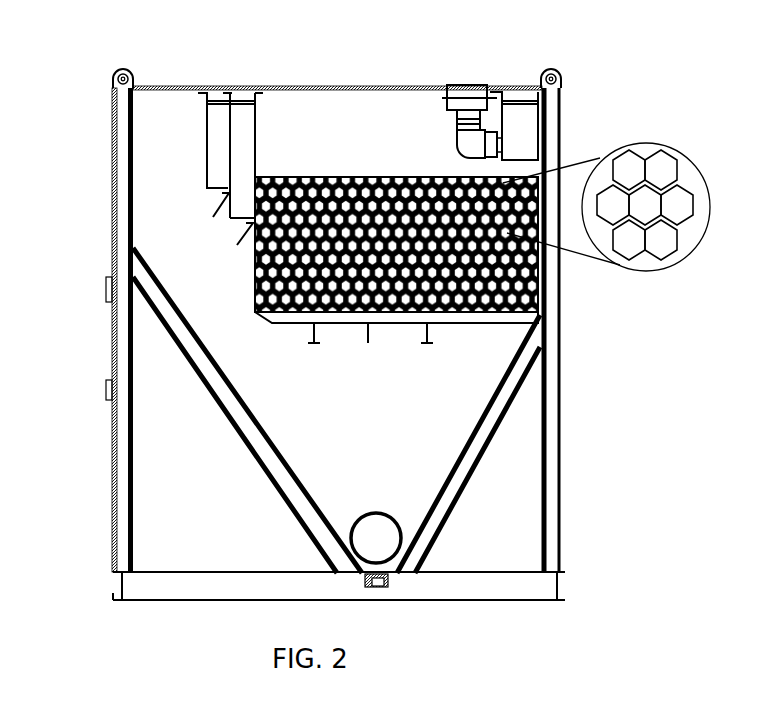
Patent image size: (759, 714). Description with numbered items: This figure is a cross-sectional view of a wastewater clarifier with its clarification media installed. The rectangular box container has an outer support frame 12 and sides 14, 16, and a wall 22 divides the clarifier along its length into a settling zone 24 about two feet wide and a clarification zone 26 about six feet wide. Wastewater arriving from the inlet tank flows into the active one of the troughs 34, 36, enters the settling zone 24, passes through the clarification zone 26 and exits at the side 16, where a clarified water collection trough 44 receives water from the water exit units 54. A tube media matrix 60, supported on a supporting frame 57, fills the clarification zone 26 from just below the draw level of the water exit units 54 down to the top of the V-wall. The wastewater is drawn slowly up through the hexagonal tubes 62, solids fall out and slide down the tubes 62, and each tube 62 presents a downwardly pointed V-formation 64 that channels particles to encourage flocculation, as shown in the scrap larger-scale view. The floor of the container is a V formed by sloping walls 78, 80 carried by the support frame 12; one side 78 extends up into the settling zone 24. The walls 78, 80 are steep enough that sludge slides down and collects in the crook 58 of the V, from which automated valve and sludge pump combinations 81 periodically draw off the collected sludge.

The outer support frame 12 is at (125, 472).
The side 14 is at (124, 220).
The side 16 is at (553, 400).
The wall 22 is at (250, 262).
The settling zone 24 is at (188, 224).
The clarification zone 26 is at (367, 382).
The trough 34 is at (218, 141).
The trough 36 is at (240, 172).
The clarified water collection trough 44 is at (515, 130).
The water exit unit 54 is at (466, 68).
The supporting frame 57 is at (388, 322).
The crook of the V-form floor 58 is at (345, 528).
The tube media matrix 60 is at (477, 247).
The tube 62 is at (628, 173).
The downwardly pointed V-formation 64 is at (666, 185).
The sloping wall 78 is at (242, 427).
The sloping wall 80 is at (462, 460).
The automated valve and sludge pump combination 81 is at (390, 585).